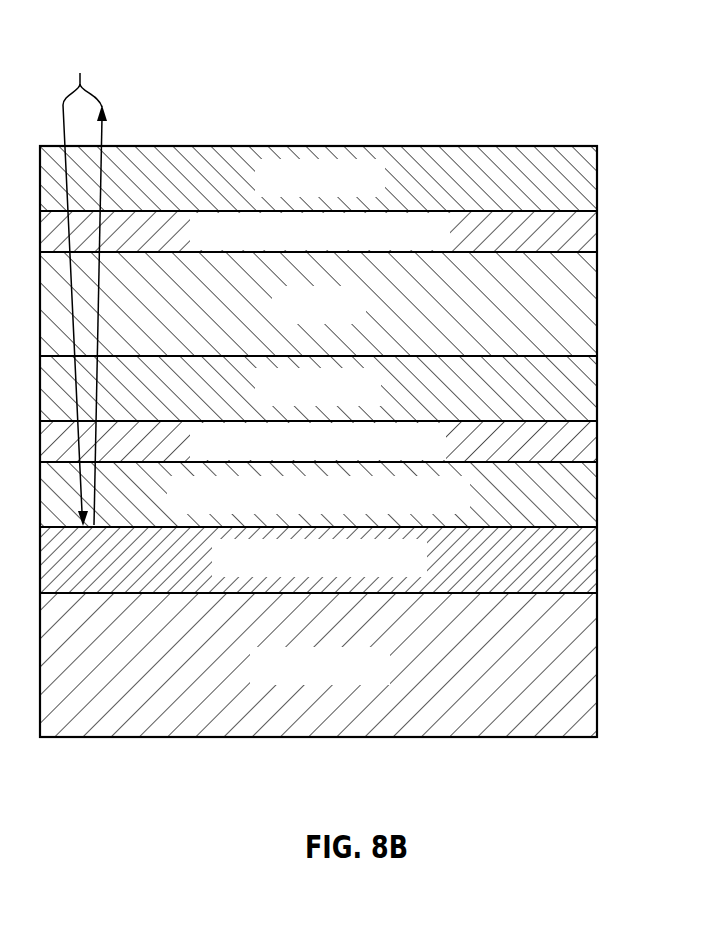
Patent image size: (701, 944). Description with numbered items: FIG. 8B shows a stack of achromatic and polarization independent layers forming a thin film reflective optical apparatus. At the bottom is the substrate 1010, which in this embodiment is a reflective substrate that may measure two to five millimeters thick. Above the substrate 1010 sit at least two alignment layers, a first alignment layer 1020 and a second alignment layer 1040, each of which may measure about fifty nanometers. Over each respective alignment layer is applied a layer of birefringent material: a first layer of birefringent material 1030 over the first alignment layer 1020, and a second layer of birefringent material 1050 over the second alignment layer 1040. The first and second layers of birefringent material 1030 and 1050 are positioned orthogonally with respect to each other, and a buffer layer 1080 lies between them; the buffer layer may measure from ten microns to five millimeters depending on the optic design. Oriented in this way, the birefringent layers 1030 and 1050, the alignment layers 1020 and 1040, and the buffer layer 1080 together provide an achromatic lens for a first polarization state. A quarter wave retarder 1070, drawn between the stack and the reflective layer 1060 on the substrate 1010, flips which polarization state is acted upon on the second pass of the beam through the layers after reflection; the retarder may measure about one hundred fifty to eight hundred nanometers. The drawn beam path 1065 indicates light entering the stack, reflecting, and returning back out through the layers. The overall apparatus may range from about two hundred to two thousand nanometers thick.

The second layer of birefringent material 1050 is at (577, 173).
The second alignment layer 1040 is at (577, 227).
The buffer layer 1080 is at (577, 313).
The first layer of birefringent material 1030 is at (577, 393).
The first alignment layer 1020 is at (577, 438).
The quarter wave retarder 1070 is at (577, 485).
The beam 1060 is at (577, 550).
The substrate 1010 is at (577, 662).
The light ray path 1065 is at (81, 283).